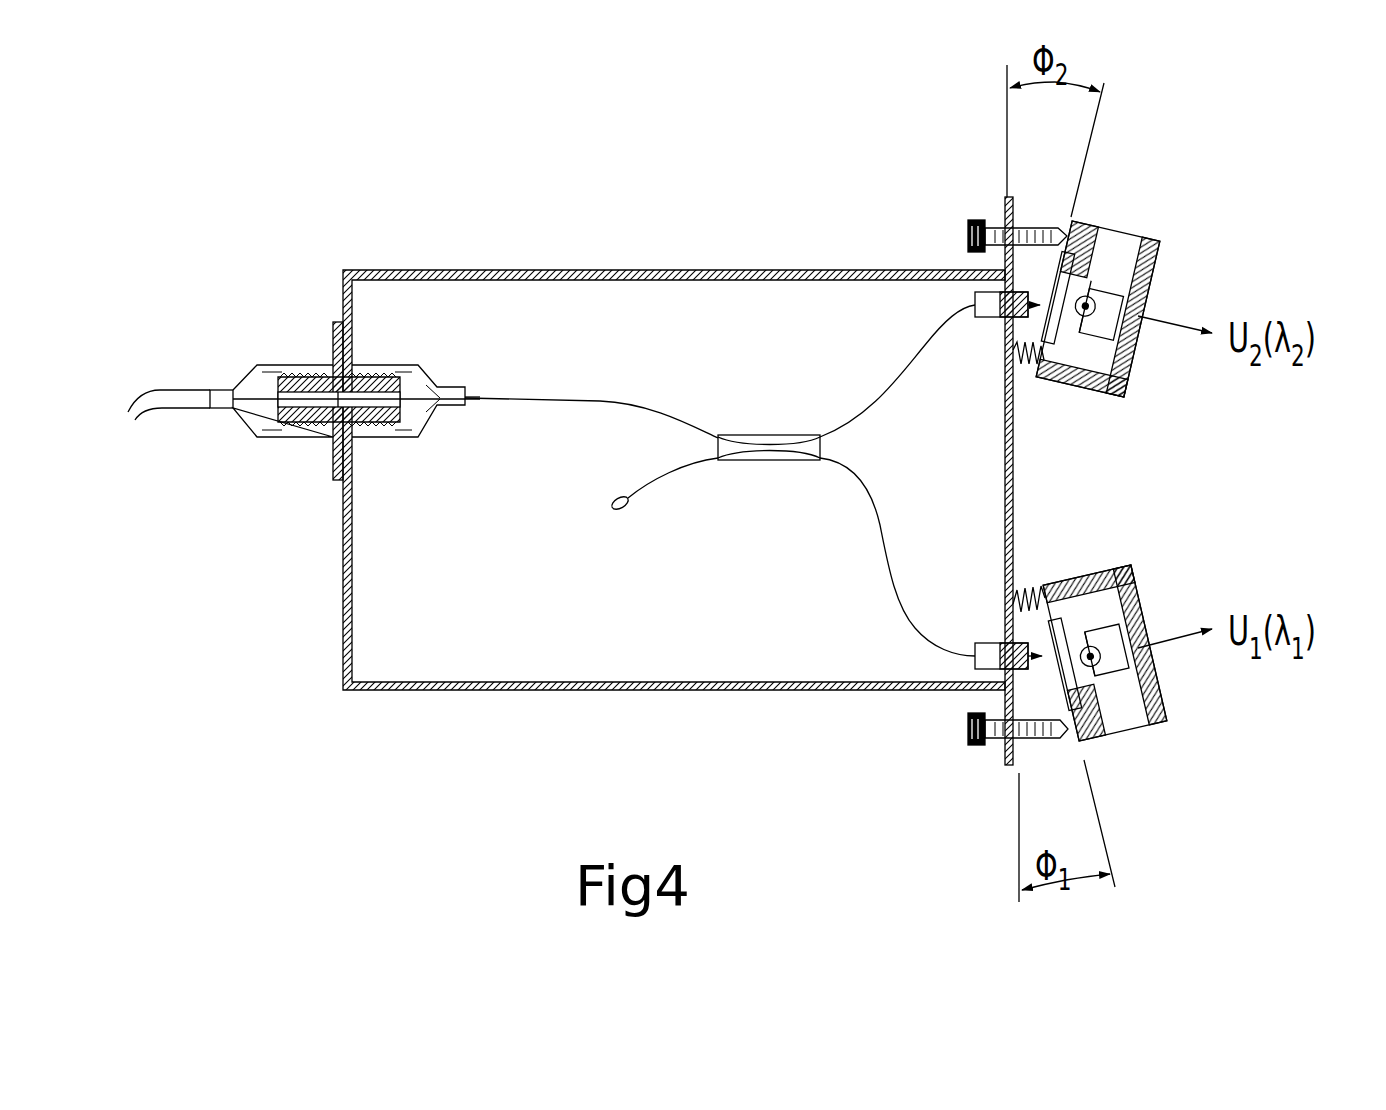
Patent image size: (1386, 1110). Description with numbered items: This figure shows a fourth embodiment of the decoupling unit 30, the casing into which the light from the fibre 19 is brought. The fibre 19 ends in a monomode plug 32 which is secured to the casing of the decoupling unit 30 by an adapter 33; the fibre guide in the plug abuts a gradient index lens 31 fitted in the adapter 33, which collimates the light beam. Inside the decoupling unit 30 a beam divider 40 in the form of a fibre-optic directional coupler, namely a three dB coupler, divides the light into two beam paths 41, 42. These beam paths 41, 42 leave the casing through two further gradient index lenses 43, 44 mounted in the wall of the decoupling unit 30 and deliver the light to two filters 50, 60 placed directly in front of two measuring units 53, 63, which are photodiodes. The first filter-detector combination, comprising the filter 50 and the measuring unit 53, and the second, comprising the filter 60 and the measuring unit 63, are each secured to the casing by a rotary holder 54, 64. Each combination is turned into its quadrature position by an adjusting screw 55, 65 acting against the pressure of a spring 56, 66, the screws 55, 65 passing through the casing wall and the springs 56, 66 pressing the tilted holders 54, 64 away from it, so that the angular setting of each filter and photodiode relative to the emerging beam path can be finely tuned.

The fibre 19 is at (163, 388).
The decoupling unit 30 is at (508, 272).
The gradient index lens 31 is at (383, 392).
The monomode plug 32 is at (262, 428).
The adapter 33 is at (334, 322).
The beam divider 40 is at (768, 434).
The beam path 41 is at (912, 370).
The beam path 42 is at (917, 628).
The gradient index lens 43 is at (990, 318).
The gradient index lens 44 is at (990, 642).
The filter 50 is at (1123, 372).
The measuring unit 53 is at (1103, 292).
The rotary holder 54 is at (1062, 276).
The adjusting screw 55 is at (976, 218).
The spring 56 is at (1027, 366).
The filter 60 is at (1065, 596).
The measuring unit 63 is at (1107, 638).
The rotary holder 64 is at (1091, 682).
The adjusting screw 65 is at (975, 740).
The spring 66 is at (1028, 590).